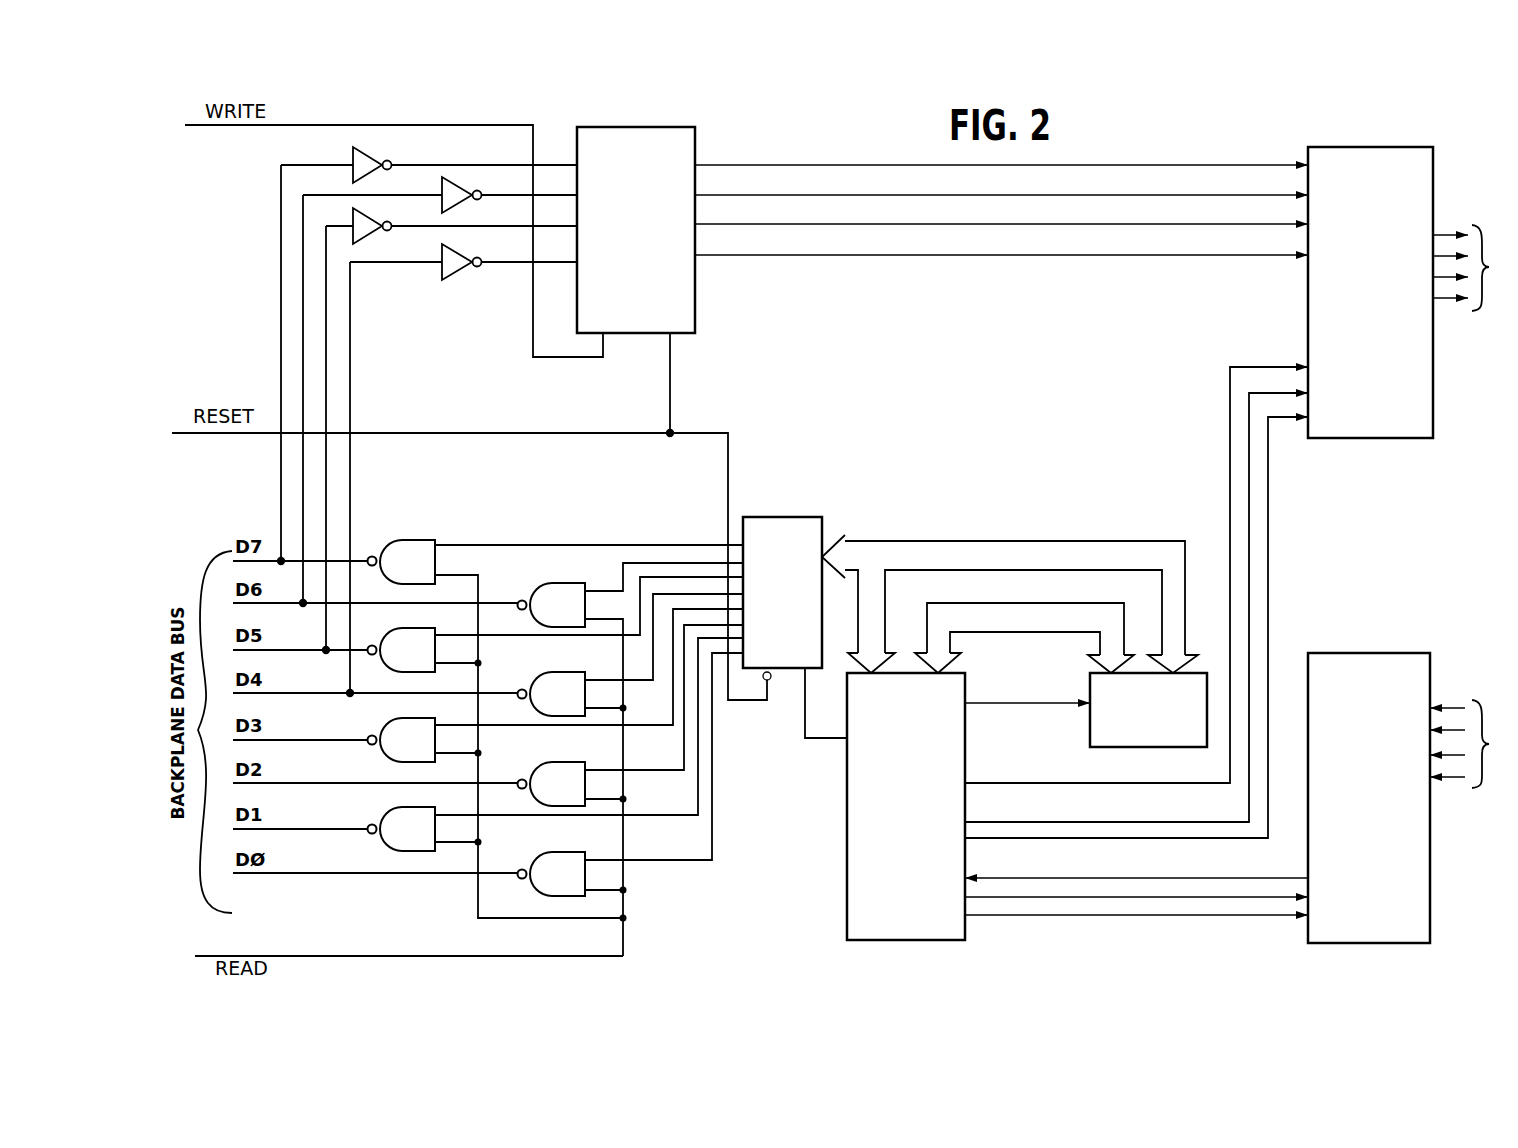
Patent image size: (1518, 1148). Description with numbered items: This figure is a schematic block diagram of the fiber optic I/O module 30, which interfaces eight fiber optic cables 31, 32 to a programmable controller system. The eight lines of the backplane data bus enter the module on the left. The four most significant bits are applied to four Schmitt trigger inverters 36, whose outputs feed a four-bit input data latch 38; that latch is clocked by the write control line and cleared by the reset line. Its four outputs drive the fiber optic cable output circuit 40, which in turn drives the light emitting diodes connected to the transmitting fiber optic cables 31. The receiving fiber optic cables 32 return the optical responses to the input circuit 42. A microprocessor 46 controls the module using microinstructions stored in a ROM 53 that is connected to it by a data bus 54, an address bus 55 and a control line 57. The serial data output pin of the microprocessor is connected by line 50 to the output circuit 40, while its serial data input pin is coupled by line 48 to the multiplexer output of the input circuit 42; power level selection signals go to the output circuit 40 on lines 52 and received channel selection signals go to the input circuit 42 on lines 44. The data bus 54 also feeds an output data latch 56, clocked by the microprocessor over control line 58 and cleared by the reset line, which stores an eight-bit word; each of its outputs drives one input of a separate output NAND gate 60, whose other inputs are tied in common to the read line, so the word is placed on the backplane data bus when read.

The fiber optic I/O module 30 is at (980, 452).
The transmitting fiber optic cables 31 is at (1494, 386).
The receiving fiber optic cables 32 is at (1489, 864).
The Schmitt trigger inverters 36 is at (372, 236).
The input data latch 38 is at (697, 130).
The fiber optic cable output circuit 40 is at (1355, 300).
The input circuit 42 is at (1337, 807).
The received channel selection lines 44 is at (1092, 898).
The microprocessor 46 is at (912, 820).
The serial data input line 48 is at (1076, 878).
The serial data output line 50 is at (1230, 456).
The power level selection lines 52 is at (1249, 505).
The ROM 53 is at (1195, 739).
The data bus 54 is at (1094, 542).
The address bus 55 is at (1003, 603).
The output data latch 56 is at (803, 517).
The control line 57 is at (995, 705).
The control line 58 is at (810, 741).
The output NAND gates 60 is at (538, 724).